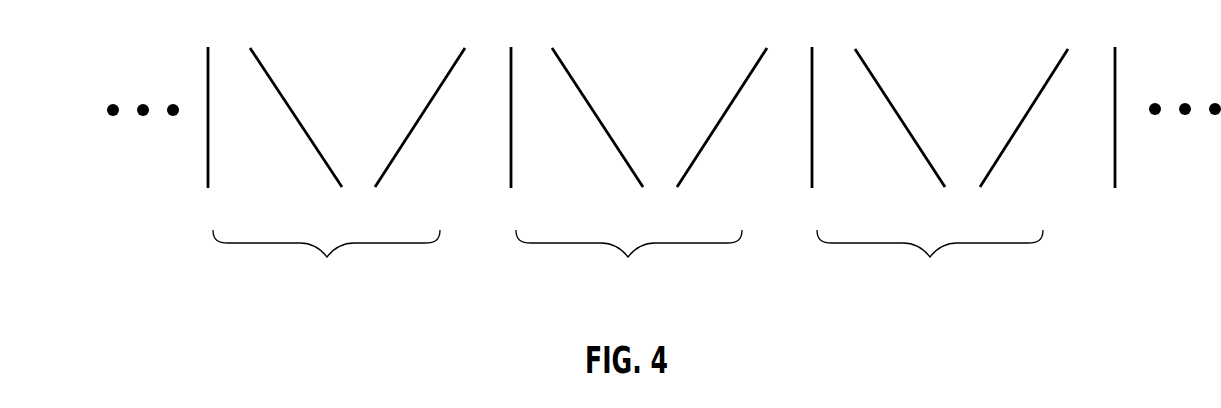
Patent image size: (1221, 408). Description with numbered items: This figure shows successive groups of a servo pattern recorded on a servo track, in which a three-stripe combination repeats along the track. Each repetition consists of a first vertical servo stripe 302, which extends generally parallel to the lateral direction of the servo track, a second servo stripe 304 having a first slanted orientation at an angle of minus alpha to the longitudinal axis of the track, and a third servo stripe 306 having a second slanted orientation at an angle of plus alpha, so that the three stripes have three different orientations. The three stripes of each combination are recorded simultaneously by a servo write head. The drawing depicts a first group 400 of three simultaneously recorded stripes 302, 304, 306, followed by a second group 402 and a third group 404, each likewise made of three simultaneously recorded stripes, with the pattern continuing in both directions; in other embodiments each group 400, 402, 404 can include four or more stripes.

The first vertical servo stripe 302 is at (208, 148).
The second servo stripe 304 is at (283, 98).
The third servo stripe 306 is at (413, 130).
The first group 400 is at (326, 259).
The second group 402 is at (629, 259).
The third group 404 is at (930, 259).